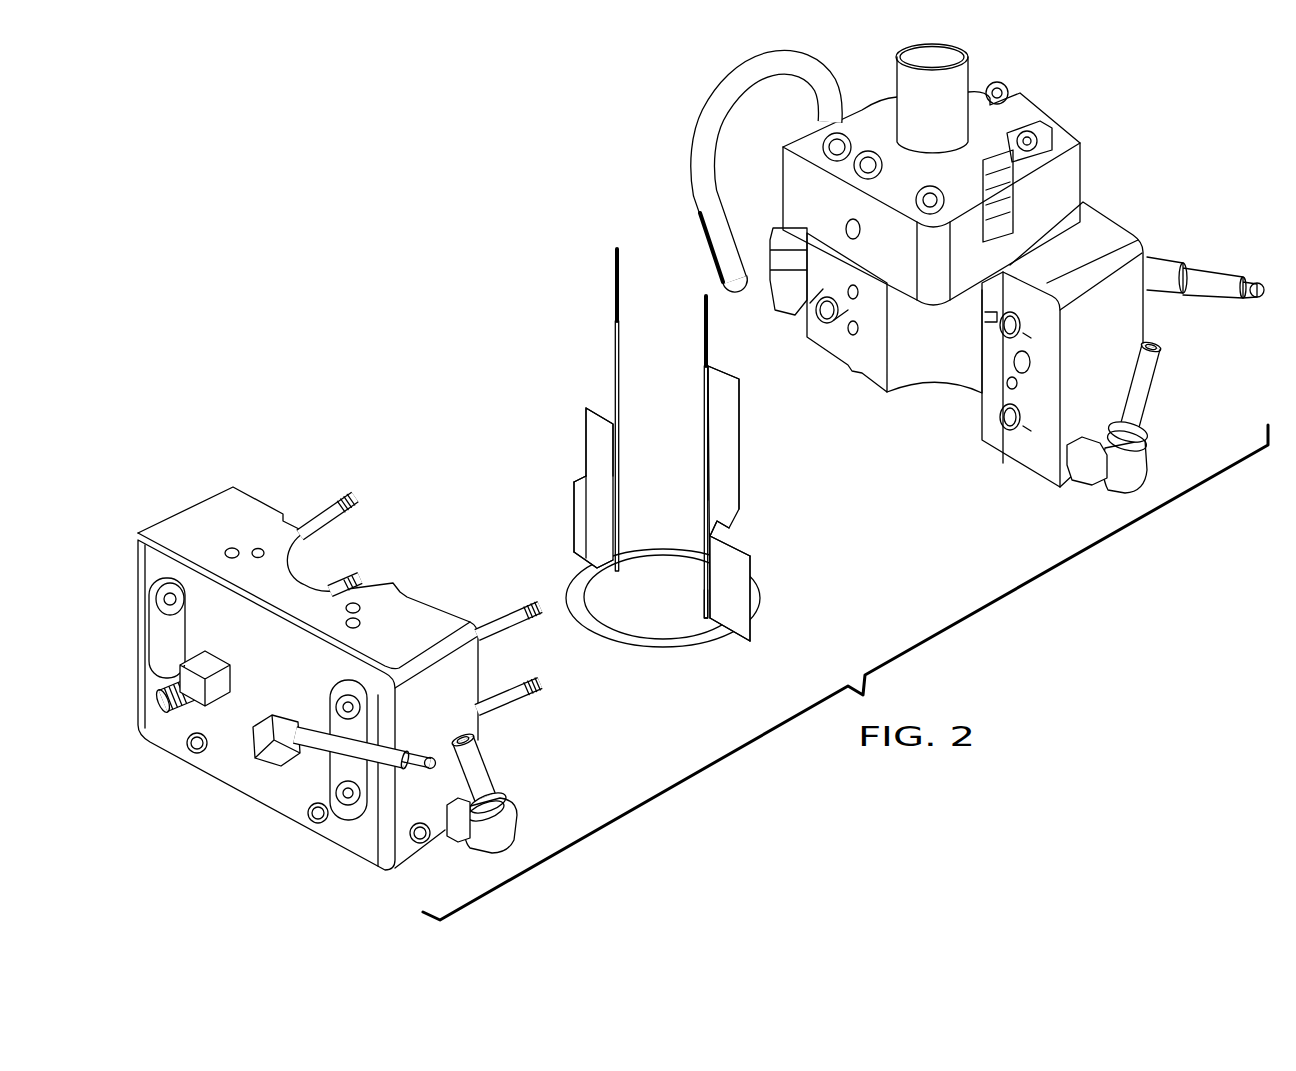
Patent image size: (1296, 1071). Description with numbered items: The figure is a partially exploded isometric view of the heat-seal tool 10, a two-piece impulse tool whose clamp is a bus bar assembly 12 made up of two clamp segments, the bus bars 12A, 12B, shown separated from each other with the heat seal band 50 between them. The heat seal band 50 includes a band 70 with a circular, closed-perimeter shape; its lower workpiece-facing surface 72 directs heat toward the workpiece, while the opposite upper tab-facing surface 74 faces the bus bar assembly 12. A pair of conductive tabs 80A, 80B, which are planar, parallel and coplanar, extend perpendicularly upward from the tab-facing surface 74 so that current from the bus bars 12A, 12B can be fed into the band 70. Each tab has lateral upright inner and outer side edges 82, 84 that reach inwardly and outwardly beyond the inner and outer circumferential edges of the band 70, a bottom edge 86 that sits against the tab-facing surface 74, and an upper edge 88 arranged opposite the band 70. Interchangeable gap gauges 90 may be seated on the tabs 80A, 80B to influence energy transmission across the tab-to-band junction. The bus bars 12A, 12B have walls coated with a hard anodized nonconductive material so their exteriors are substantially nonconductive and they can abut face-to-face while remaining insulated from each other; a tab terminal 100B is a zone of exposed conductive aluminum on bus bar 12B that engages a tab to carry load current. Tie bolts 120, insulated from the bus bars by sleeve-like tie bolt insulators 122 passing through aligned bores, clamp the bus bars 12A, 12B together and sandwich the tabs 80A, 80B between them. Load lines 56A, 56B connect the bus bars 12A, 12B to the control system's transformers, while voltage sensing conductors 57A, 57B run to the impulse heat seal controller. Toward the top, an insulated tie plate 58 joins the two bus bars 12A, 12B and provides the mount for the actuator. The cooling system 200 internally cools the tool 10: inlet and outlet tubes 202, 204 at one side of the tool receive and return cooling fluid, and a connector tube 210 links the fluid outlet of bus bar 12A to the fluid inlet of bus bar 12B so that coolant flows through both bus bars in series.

The heat-seal tool 10 is at (393, 84).
The bus bar assembly 12 is at (512, 129).
The bus bar 12A is at (223, 507).
The bus bar 12B is at (1100, 228).
The heat seal band 50 is at (540, 277).
The load line 56A is at (352, 760).
The load line 56B is at (1207, 290).
The voltage sensing conductor 57A is at (612, 288).
The voltage sensing conductor 57B is at (704, 318).
The insulated tie plate 58 is at (1035, 120).
The band 70 is at (604, 651).
The workpiece-facing surface 72 is at (590, 633).
The tab-facing surface 74 is at (665, 552).
The conductive tab 80A is at (577, 545).
The conductive tab 80B is at (703, 624).
The inner side edge 82 is at (702, 602).
The outer side edge 84 is at (573, 510).
The bottom edge 86 is at (580, 555).
The upper edge 88 is at (575, 480).
The gap gauge 90 is at (585, 438).
The tab terminal 100B is at (990, 437).
The tie bolt 120 is at (162, 597).
The tie bolt insulator 122 is at (150, 580).
The cooling system 200 is at (805, 38).
The inlet tube 202 is at (508, 820).
The outlet tube 204 is at (1128, 453).
The connector tube 210 is at (742, 96).